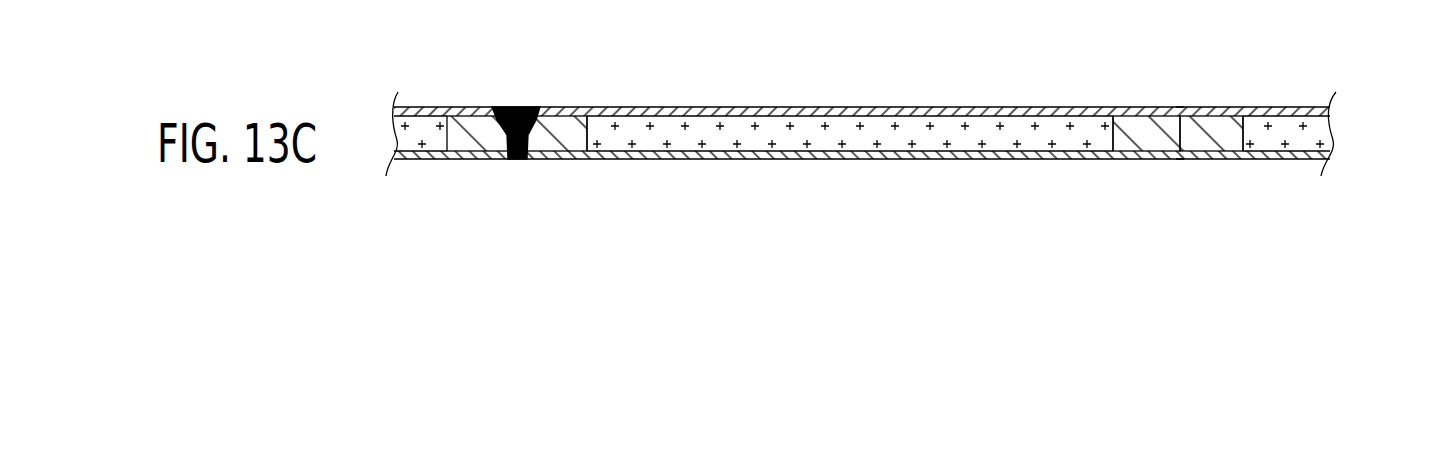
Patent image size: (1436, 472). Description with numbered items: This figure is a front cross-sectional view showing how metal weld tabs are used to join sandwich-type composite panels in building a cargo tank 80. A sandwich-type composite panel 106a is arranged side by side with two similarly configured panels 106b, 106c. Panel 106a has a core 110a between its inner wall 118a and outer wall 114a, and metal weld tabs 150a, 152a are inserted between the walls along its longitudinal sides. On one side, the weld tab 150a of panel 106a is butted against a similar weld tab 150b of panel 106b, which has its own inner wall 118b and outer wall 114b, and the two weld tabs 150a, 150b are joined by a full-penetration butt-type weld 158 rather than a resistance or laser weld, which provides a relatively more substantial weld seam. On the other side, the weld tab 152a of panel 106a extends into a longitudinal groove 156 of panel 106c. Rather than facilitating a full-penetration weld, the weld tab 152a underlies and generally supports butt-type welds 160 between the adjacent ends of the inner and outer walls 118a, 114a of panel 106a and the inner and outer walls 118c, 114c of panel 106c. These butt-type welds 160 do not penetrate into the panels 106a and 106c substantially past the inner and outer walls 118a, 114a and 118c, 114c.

The laminate / composite structure 80 is at (474, 86).
The sandwich-type composite panel 106a is at (938, 94).
The panel 106b is at (417, 175).
The panel 106c is at (1289, 86).
The core of first module 110a is at (888, 138).
The outer wall 114a is at (738, 113).
The upper skin layer of second module 114b is at (423, 108).
The outer wall 114c is at (1312, 110).
The inner wall 118a is at (755, 153).
The lower skin layer of second module 118b is at (441, 153).
The inner wall 118c is at (1302, 153).
The weld tab 150a is at (576, 138).
The weld tab 150b is at (490, 140).
The weld tab 152a is at (1141, 138).
The longitudinal groove 156 is at (1198, 136).
The full-penetration butt-type weld 158 is at (520, 108).
The butt-type welds 160 is at (1180, 108).